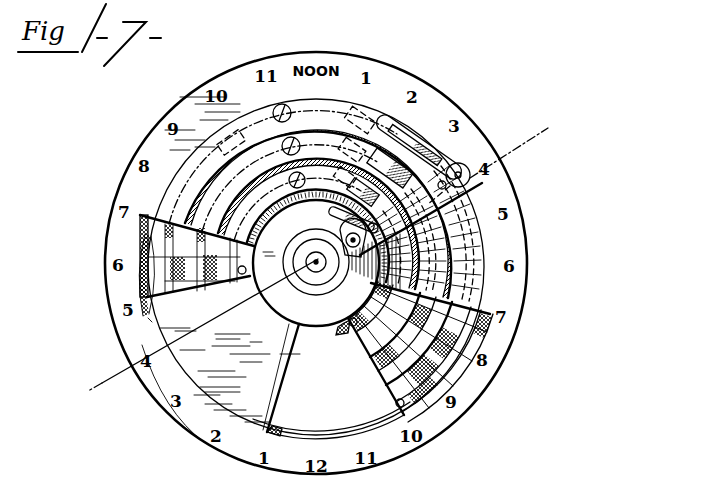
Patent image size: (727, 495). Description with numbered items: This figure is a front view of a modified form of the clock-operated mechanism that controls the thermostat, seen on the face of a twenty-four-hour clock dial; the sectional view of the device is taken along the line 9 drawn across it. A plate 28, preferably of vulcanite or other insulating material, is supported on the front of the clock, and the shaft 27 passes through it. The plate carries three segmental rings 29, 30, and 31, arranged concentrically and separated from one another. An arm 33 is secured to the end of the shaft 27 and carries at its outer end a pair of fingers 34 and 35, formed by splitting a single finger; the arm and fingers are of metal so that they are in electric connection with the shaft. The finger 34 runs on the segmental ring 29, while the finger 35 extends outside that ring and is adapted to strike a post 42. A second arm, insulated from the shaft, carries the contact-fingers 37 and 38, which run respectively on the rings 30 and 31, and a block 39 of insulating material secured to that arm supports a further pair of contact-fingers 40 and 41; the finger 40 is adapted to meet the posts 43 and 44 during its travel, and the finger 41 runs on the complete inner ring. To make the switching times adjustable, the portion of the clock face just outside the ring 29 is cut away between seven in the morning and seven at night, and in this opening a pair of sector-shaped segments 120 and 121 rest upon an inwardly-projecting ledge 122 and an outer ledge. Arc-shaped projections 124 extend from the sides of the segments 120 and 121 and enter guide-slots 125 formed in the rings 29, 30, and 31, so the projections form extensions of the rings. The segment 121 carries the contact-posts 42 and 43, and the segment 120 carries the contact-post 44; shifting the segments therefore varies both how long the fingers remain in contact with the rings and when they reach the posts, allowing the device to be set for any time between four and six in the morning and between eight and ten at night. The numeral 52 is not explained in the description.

The section line 9 is at (319, 267).
The shaft 27 is at (316, 262).
The plate 28 is at (230, 259).
The segmental ring 29 is at (301, 113).
The segmental ring 30 is at (306, 146).
The segmental ring 31 is at (310, 180).
The arm 33 is at (283, 261).
The finger 34 is at (382, 120).
The finger 35 is at (408, 138).
The contact-finger 37 is at (440, 164).
The contact-finger 38 is at (316, 263).
The block of insulating material 39 is at (447, 188).
The contact-finger 40 is at (340, 212).
The contact-finger 41 is at (348, 226).
The contact-post 42 is at (394, 406).
The contact-post 43 is at (355, 325).
The contact-post 44 is at (241, 275).
The pin 52 is at (346, 313).
The sector-shaped segment 120 is at (196, 284).
The sector-shaped segment 121 is at (386, 380).
The inwardly-projecting ledge 122 is at (157, 325).
The arc-shaped projections 124 is at (393, 345).
The guide-slots 125 is at (240, 150).